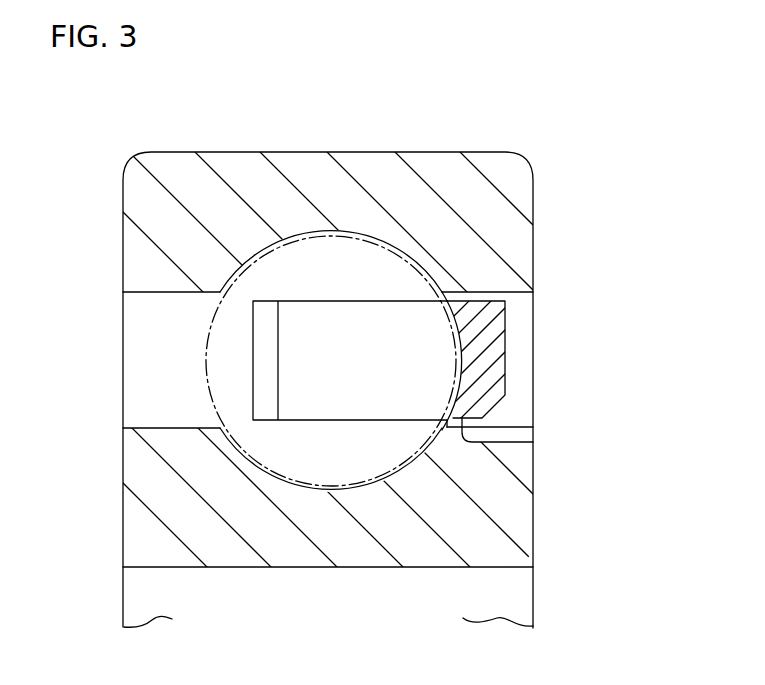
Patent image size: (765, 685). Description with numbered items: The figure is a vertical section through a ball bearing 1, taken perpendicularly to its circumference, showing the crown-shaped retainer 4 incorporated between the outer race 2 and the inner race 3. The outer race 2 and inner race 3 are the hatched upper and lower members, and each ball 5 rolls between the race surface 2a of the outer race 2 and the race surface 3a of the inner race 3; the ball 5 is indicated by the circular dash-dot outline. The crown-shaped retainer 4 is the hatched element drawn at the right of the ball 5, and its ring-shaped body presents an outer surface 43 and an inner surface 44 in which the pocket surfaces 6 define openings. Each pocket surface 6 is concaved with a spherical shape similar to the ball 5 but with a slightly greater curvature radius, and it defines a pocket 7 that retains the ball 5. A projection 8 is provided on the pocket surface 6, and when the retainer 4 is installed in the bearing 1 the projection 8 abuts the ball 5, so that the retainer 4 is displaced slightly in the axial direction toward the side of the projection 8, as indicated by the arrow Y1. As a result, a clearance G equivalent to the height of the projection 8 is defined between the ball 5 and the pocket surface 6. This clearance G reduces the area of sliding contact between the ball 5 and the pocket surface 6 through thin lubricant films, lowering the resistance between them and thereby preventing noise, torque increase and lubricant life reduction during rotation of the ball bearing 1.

The ball bearing 1 is at (113, 168).
The outer race 2 is at (249, 177).
The race surface 2a is at (333, 233).
The inner race 3 is at (347, 543).
The race surface 3a is at (273, 467).
The crown-shaped retainer 4 is at (507, 329).
The outer surface 43 is at (483, 312).
The inner surface 44 is at (483, 442).
The ball 5 is at (201, 347).
The pocket surface 6 is at (445, 362).
The pocket 7 is at (315, 420).
The projection 8 is at (446, 301).
The clearance G is at (452, 397).
The arrow Y1 is at (613, 358).